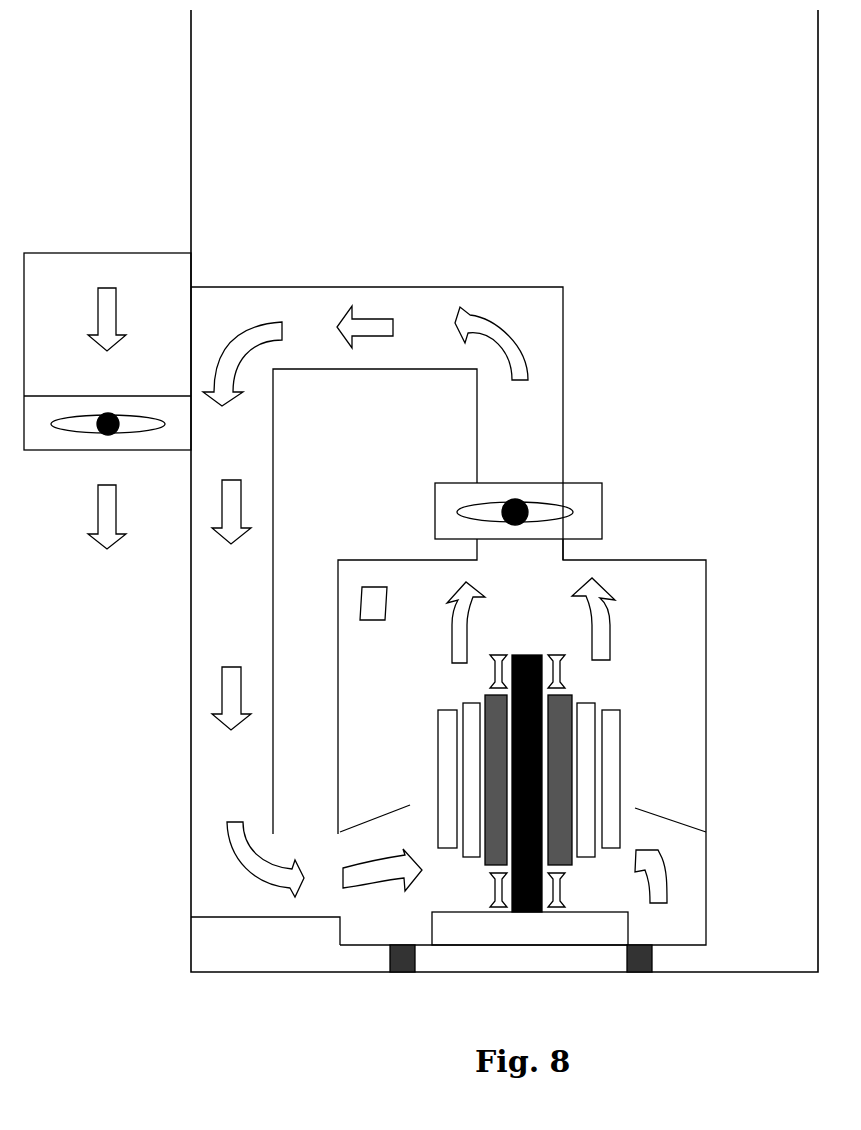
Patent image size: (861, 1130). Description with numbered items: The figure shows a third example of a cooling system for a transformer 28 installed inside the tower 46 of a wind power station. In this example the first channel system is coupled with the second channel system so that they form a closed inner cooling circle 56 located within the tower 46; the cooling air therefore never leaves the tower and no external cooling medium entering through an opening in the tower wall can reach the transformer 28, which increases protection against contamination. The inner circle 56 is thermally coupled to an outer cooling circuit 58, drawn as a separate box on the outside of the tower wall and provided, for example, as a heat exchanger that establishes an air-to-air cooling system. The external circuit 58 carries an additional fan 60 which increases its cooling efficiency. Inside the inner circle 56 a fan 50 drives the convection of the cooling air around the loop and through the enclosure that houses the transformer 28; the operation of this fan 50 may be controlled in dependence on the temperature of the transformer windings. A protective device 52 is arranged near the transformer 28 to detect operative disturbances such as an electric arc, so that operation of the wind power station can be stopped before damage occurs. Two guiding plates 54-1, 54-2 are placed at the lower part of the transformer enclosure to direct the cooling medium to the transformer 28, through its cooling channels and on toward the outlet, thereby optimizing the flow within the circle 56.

The tower 46 is at (191, 79).
The outer cooling circuit 58 is at (25, 253).
The additional fan 60 is at (63, 452).
The cooling circle 56 is at (377, 287).
The fan 50 is at (453, 483).
The protective device 52 is at (372, 587).
The transformer 28 is at (630, 698).
The guiding plate 54-1 is at (350, 830).
The guiding plate 54-2 is at (636, 808).